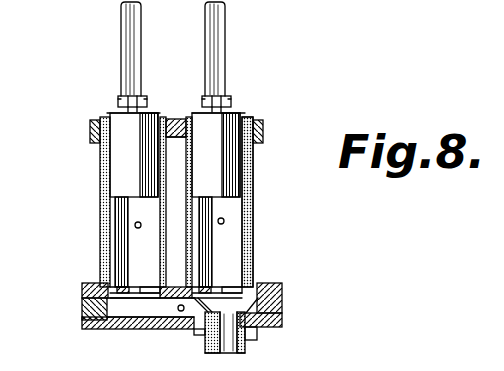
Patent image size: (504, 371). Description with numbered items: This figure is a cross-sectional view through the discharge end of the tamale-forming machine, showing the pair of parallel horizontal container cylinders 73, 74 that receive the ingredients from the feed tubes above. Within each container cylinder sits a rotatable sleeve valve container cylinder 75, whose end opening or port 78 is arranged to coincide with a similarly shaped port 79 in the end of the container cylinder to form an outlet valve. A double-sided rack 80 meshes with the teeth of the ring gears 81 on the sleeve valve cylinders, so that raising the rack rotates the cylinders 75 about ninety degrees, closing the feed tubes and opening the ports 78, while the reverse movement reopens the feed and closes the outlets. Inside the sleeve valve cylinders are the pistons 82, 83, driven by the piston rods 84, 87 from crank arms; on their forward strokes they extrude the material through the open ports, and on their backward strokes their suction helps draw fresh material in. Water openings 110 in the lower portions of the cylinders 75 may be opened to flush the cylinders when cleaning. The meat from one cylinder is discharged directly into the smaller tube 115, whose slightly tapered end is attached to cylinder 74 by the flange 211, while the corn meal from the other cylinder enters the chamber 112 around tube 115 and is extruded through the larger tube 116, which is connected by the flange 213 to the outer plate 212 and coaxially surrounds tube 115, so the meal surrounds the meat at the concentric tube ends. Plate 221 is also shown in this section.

The container cylinder 73 is at (101, 259).
The container cylinder 74 is at (252, 246).
The sleeve valve container cylinder 75 is at (106, 214).
The end opening or port 78 is at (106, 282).
The port 79 is at (152, 290).
The double-sided rack 80 is at (176, 119).
The ring gear 81 is at (92, 138).
The piston 82 is at (220, 169).
The piston 83 is at (124, 166).
The piston rod 84 is at (130, 37).
The piston rod 87 is at (215, 37).
The water opening 110 is at (101, 232).
The chamber 112 is at (140, 312).
The tube 115 is at (296, 356).
The tube 116 is at (250, 335).
The flange 211 is at (280, 296).
The outer plate 212 is at (86, 326).
The flange 213 is at (200, 333).
The manifold plate 221 is at (84, 296).